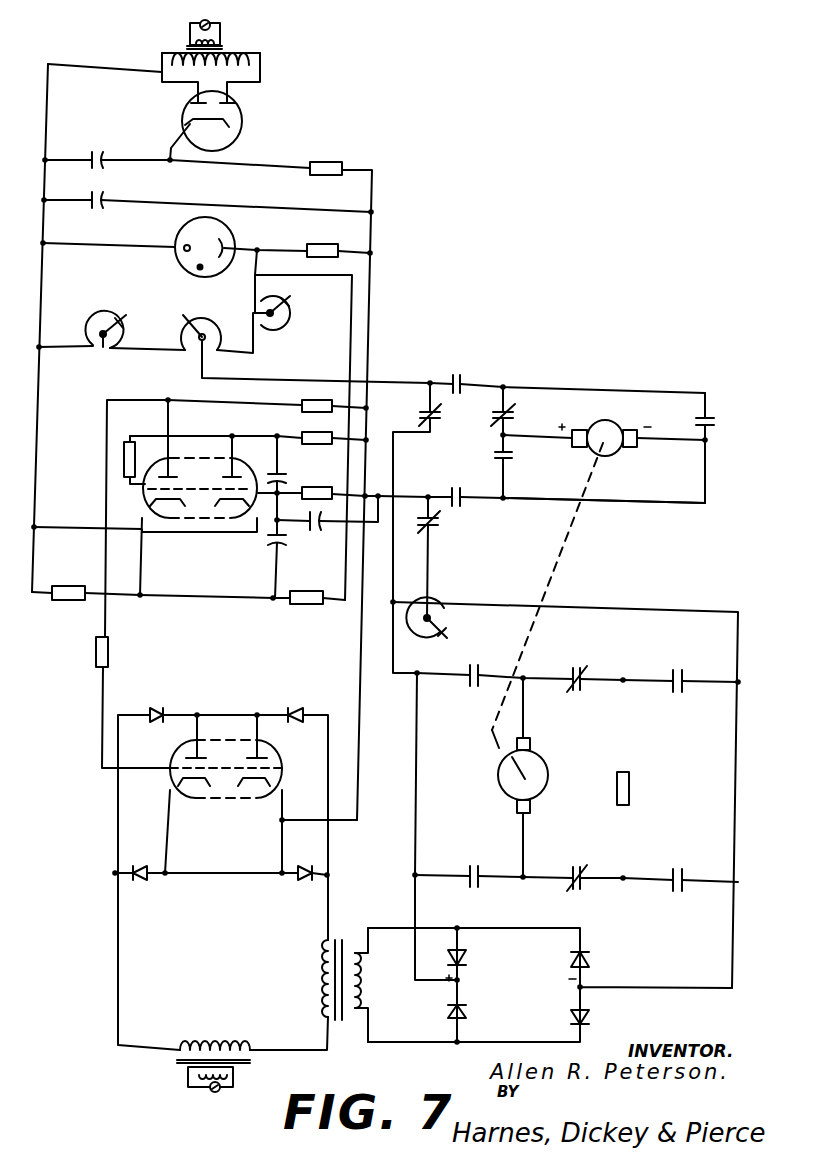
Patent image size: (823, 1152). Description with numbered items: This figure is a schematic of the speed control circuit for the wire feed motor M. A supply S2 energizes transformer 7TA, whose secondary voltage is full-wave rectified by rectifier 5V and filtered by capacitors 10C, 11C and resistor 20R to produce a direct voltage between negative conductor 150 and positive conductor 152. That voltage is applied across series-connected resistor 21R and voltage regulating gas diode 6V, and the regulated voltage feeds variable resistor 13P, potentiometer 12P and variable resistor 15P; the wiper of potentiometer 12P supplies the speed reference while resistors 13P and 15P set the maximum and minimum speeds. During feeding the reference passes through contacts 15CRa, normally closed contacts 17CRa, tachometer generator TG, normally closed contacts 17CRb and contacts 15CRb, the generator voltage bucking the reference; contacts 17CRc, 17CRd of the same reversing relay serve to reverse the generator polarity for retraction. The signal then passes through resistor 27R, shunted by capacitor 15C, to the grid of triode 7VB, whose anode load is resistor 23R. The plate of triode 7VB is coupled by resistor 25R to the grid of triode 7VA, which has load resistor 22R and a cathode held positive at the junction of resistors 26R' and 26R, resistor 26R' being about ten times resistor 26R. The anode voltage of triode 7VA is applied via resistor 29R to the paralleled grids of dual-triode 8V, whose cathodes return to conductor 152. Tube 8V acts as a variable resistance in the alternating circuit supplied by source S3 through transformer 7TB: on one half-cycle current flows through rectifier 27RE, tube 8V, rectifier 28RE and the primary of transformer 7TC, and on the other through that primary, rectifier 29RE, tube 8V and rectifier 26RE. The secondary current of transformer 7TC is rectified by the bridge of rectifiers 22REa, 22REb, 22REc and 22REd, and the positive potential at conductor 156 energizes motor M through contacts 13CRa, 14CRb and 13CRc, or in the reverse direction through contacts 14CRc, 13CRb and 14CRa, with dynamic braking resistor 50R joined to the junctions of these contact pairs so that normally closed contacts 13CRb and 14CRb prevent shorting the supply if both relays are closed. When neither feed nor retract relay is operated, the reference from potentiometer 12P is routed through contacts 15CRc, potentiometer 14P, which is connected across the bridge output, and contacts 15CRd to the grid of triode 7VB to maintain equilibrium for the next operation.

The switch S2 is at (200, 25).
The transformer 7TA is at (262, 56).
The conductor 150 is at (48, 108).
The rectifier 5V is at (243, 118).
The capacitor 11C is at (100, 150).
The resistor 20R is at (332, 152).
The conductor 152 is at (372, 190).
The capacitor 10C is at (105, 198).
The voltage regulating gas diode 6V is at (232, 238).
The resistor 21R is at (330, 236).
The variable resistor 15P is at (106, 300).
The potentiometer 12P is at (200, 318).
The variable resistor 13P is at (316, 306).
The relay contacts 15CRc is at (418, 416).
The relay contacts 15CRa is at (458, 372).
The normally closed relay contacts 17CRa is at (515, 410).
The relay contact 17CRc is at (694, 420).
The tachometer generator TG is at (620, 412).
The relay contact 17CRd is at (494, 455).
The relay contacts 15CRb is at (463, 478).
The normally closed relay contacts 17CRb is at (604, 481).
The relay contacts 15CRd is at (436, 525).
The load resistor 22R is at (304, 404).
The load resistor 23R is at (304, 436).
The resistor 27R is at (322, 478).
The triode 7VA is at (166, 455).
The triode 7VB is at (248, 470).
The resistor 25R is at (124, 460).
The capacitor 15C is at (312, 532).
The resistor 26R is at (310, 583).
The resistor 26R' is at (59, 577).
The resistor 29R is at (110, 652).
The rectifier 27RE is at (160, 706).
The rectifier 29RE is at (296, 706).
The dual-triode 8V is at (283, 757).
The rectifier 26RE is at (140, 882).
The rectifier 28RE is at (304, 882).
The transformer 7TB is at (176, 1057).
The transformer 7TC is at (340, 1028).
The alternating current source S3 is at (212, 1092).
The potentiometer 14P is at (442, 638).
The conductor 156 is at (393, 845).
The normally open relay contacts 13CRa is at (472, 688).
The normally closed relay contacts 13CRb is at (575, 692).
The normally open relay contacts 14CRa is at (676, 694).
The motor M is at (548, 768).
The dynamic braking resistor 50R is at (630, 788).
The normally open relay contacts 14CRc is at (480, 848).
The normally closed relay contacts 14CRb is at (584, 850).
The normally open relay contacts 13CRc is at (676, 868).
The rectifier 22REa is at (462, 958).
The rectifier 22REb is at (463, 1014).
The rectifier 22REc is at (586, 962).
The rectifier 22REd is at (590, 1016).